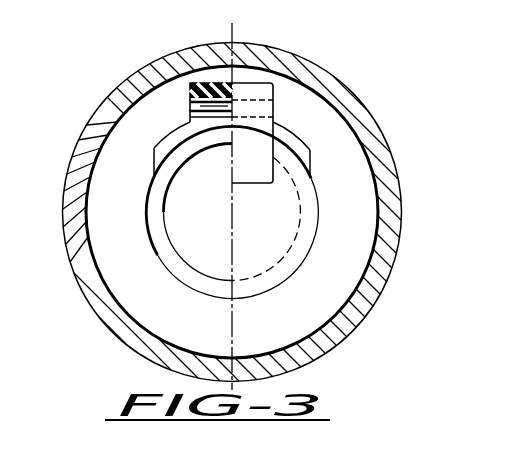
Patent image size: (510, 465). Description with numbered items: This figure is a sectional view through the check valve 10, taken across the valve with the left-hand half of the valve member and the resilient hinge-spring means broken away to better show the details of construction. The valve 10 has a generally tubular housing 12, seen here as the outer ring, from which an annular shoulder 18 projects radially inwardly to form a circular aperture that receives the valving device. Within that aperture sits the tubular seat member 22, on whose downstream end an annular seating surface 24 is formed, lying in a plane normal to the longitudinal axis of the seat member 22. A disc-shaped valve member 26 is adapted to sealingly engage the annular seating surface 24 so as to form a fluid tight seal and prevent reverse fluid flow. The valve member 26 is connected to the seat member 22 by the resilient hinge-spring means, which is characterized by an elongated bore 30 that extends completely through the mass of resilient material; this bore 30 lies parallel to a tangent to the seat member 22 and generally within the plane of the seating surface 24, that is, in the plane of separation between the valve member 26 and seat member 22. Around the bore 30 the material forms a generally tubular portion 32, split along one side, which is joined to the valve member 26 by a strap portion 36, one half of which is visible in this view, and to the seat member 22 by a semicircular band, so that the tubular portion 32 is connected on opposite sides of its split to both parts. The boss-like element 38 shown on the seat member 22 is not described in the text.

The valve 10 is at (98, 84).
The tubular housing 12 is at (382, 156).
The annular shoulder 18 is at (330, 291).
The tubular seat member 22 is at (151, 189).
The annular seating surface 24 is at (150, 224).
The disc-shaped valve member 26 is at (292, 216).
The elongated bore 30 is at (190, 105).
The tubular portion 32 is at (226, 83).
The strap portion 36 is at (245, 177).
The boss 38 is at (172, 143).